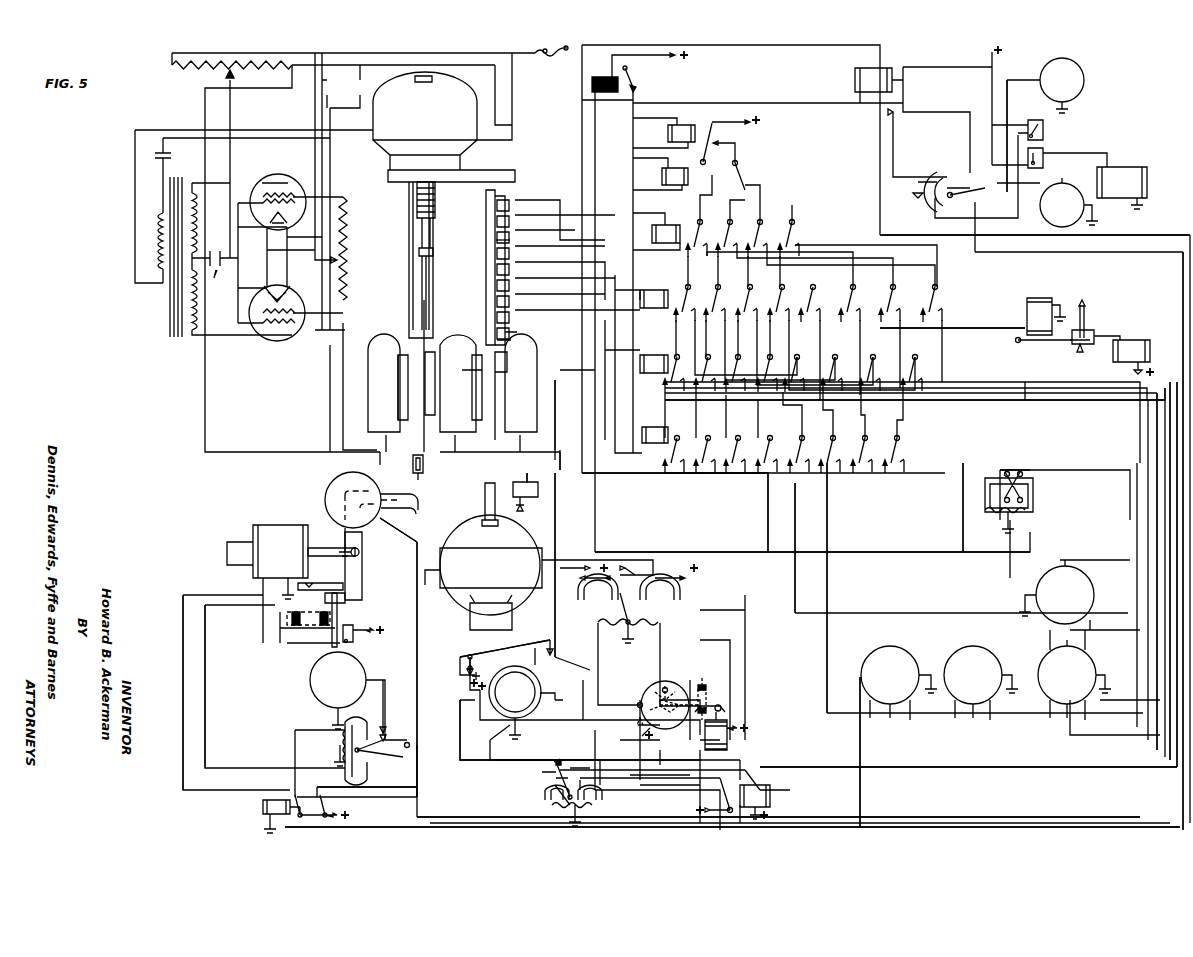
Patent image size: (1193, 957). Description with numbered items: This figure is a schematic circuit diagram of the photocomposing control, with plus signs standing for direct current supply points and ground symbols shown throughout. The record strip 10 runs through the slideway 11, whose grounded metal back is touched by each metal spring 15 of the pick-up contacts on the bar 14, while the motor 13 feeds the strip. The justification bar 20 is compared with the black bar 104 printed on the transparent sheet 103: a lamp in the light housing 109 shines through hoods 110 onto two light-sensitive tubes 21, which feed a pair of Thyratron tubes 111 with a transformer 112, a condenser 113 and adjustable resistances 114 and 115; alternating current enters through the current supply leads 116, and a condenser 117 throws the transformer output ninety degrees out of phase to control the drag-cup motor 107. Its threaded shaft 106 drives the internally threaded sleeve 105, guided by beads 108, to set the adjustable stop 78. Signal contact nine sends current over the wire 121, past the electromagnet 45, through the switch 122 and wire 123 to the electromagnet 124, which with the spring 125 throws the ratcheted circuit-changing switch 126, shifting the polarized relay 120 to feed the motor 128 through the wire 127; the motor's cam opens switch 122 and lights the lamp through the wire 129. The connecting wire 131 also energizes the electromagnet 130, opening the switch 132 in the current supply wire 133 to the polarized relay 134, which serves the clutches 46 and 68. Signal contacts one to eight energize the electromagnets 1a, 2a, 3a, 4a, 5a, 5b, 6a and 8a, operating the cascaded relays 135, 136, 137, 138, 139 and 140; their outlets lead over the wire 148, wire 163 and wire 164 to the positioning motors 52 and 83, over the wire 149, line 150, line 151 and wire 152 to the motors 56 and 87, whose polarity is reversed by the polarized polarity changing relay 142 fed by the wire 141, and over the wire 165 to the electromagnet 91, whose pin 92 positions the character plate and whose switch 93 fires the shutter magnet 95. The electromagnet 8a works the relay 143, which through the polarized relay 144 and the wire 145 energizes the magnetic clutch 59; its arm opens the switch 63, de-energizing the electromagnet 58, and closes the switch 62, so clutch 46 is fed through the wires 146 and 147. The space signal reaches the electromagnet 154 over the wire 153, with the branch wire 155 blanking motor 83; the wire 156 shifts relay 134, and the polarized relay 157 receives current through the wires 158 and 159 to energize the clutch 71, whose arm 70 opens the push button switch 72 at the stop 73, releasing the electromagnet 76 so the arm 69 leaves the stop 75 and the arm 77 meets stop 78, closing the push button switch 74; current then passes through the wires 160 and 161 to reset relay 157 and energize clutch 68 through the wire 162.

The record strip 10 is at (492, 202).
The slideway 11 is at (486, 192).
The motor 13 is at (522, 536).
The bar 14 is at (515, 235).
The metal spring 15 is at (492, 232).
The justification bar 20 is at (505, 400).
The light-sensitive tube 21 is at (452, 383).
The electromagnet 45 is at (520, 478).
The clutch 46 is at (1084, 76).
The positioning motor 52 is at (982, 650).
The motor 56 is at (1093, 662).
The electromagnet 58 is at (1125, 168).
The magnetic clutch 59 is at (1080, 182).
The switch 62 is at (1045, 130).
The switch 63 is at (1044, 162).
The clutch 68 is at (334, 490).
The arm 69 is at (362, 568).
The arm 70 is at (340, 612).
The clutch 71 is at (310, 680).
The push button switch 72 is at (353, 645).
The stop 73 is at (305, 638).
The push button switch 74 is at (325, 598).
The stop 75 is at (327, 583).
The electromagnet 76 is at (280, 525).
The arm 77 is at (410, 512).
The adjustable stop 78 is at (422, 483).
The positioning motor 83 is at (905, 650).
The motor 87 is at (1036, 583).
The electromagnet 91 is at (1027, 312).
The pin 92 is at (1086, 310).
The switch 93 is at (1086, 345).
The shutter magnet 95 is at (1136, 342).
The transparent sheet 103 is at (426, 314).
The black bar 104 is at (434, 406).
The internally threaded sleeve 105 is at (409, 277).
The threaded shaft 106 is at (416, 203).
The drag-cup motor 107 is at (445, 95).
The beads 108 is at (427, 283).
The light housing 109 is at (452, 342).
The hoods 110 is at (410, 384).
The Thyratron tubes 111 is at (274, 175).
The transformer 112 is at (130, 206).
The condenser 113 is at (216, 272).
The adjustable resistance 114 is at (218, 80).
The adjustable resistance 115 is at (337, 263).
The current supply leads 116 is at (535, 55).
The condenser 117 is at (157, 152).
The polarized relay 120 is at (690, 600).
The wire 121 is at (555, 425).
The switch 122 is at (545, 655).
The wire 123 is at (460, 688).
The electromagnet 124 is at (727, 742).
The spring 125 is at (708, 693).
The ratcheted circuit-changing switch 126 is at (650, 694).
The wire 127 is at (578, 702).
The motor 128 is at (498, 708).
The wire 129 is at (558, 520).
The electromagnet 130 is at (770, 796).
The connecting wire 131 is at (664, 473).
The switch 132 is at (730, 795).
The current supply wire 133 is at (663, 778).
The polarized relay 134 is at (532, 796).
The relay 135 is at (714, 135).
The relay 136 is at (745, 156).
The relay 137 is at (800, 234).
The relay 138 is at (945, 295).
The relay 139 is at (948, 359).
The relay 140 is at (915, 445).
The wire 141 is at (590, 384).
The polarized polarity changing relay 142 is at (953, 528).
The relay 143 is at (880, 100).
The polarized relay 144 is at (925, 205).
The wire 145 is at (913, 826).
The wire 146 is at (1035, 252).
The wire 147 is at (1008, 108).
The wire 148 is at (1051, 380).
The wire 149 is at (970, 412).
The line 150 is at (1130, 412).
The line 151 is at (1085, 455).
The wire 152 is at (796, 480).
The wire 153 is at (1080, 393).
The electromagnet 154 is at (265, 797).
The branch wire 155 is at (863, 781).
The wire 156 is at (424, 822).
The polarized relay 157 is at (338, 740).
The wire 158 is at (420, 788).
The wire 159 is at (384, 712).
The wire 160 is at (183, 661).
The wire 161 is at (206, 690).
The wire 162 is at (418, 636).
The wire 163 is at (829, 516).
The wire 164 is at (1046, 398).
The wire 165 is at (970, 332).
The electromagnet 1a is at (668, 134).
The electromagnet 2a is at (662, 180).
The electromagnet 3a is at (664, 226).
The electromagnet 4a is at (652, 290).
The electromagnet 5a is at (658, 374).
The electromagnet 5b is at (642, 438).
The electromagnet 6a is at (603, 76).
The electromagnet 8a is at (855, 80).